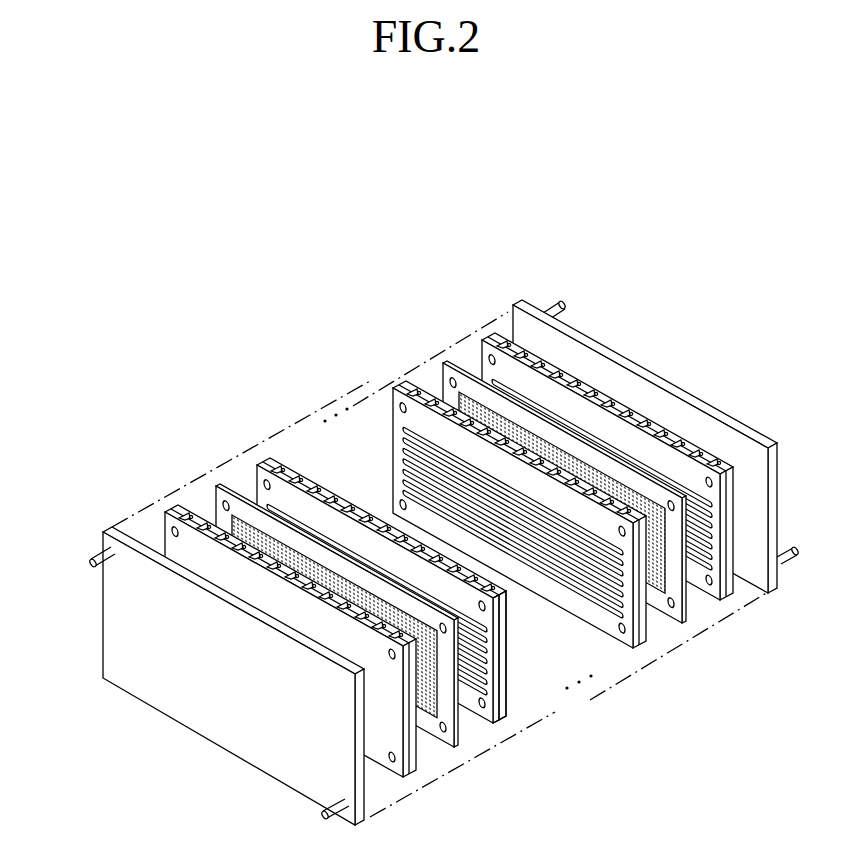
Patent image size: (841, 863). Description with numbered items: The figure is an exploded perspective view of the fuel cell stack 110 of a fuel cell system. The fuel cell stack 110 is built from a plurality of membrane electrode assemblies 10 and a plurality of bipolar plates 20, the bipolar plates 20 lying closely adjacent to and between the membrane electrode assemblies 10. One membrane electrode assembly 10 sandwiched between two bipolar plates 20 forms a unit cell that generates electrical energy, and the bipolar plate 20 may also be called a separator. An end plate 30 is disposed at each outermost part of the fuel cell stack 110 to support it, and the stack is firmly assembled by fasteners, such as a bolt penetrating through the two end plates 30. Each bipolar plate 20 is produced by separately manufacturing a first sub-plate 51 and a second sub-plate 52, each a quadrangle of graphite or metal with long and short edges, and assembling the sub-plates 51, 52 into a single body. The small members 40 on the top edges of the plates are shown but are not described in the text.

The fuel cell stack 110 is at (300, 342).
The end plate 30 is at (611, 353).
The bipolar plate 20 is at (413, 776).
The membrane electrode assembly 10 is at (456, 750).
The fastening member 40 is at (300, 472).
The first sub-plate 51 is at (497, 726).
The second sub-plate 52 is at (510, 713).